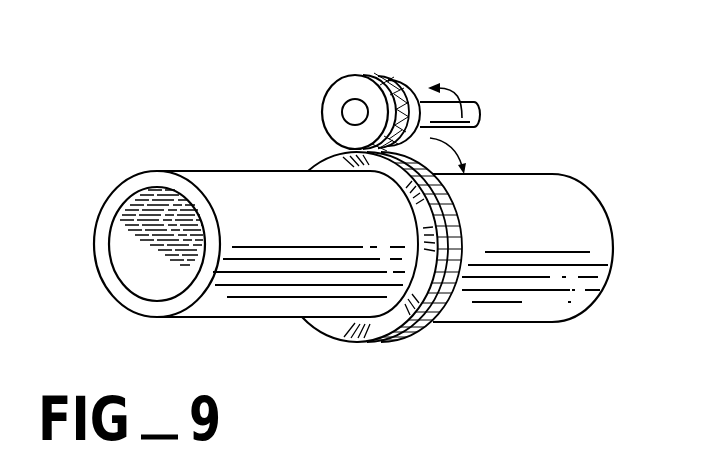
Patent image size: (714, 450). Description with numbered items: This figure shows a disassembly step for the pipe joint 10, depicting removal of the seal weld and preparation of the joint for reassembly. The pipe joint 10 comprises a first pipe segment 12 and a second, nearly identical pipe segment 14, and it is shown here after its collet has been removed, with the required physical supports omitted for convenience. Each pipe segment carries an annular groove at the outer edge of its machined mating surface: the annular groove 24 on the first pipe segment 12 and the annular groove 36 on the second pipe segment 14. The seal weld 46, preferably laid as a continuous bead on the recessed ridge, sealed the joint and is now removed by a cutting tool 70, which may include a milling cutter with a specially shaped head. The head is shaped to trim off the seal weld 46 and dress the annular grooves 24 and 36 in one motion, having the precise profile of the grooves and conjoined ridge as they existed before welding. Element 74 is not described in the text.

The pipe joint 10 is at (278, 110).
The first pipe segment 12 is at (215, 171).
The second pipe segment 14 is at (543, 176).
The annular groove 24 is at (336, 339).
The annular groove 36 is at (365, 341).
The seal weld 46 is at (416, 323).
The cutting tool 70 is at (367, 76).
The roller shaft 74 is at (483, 449).